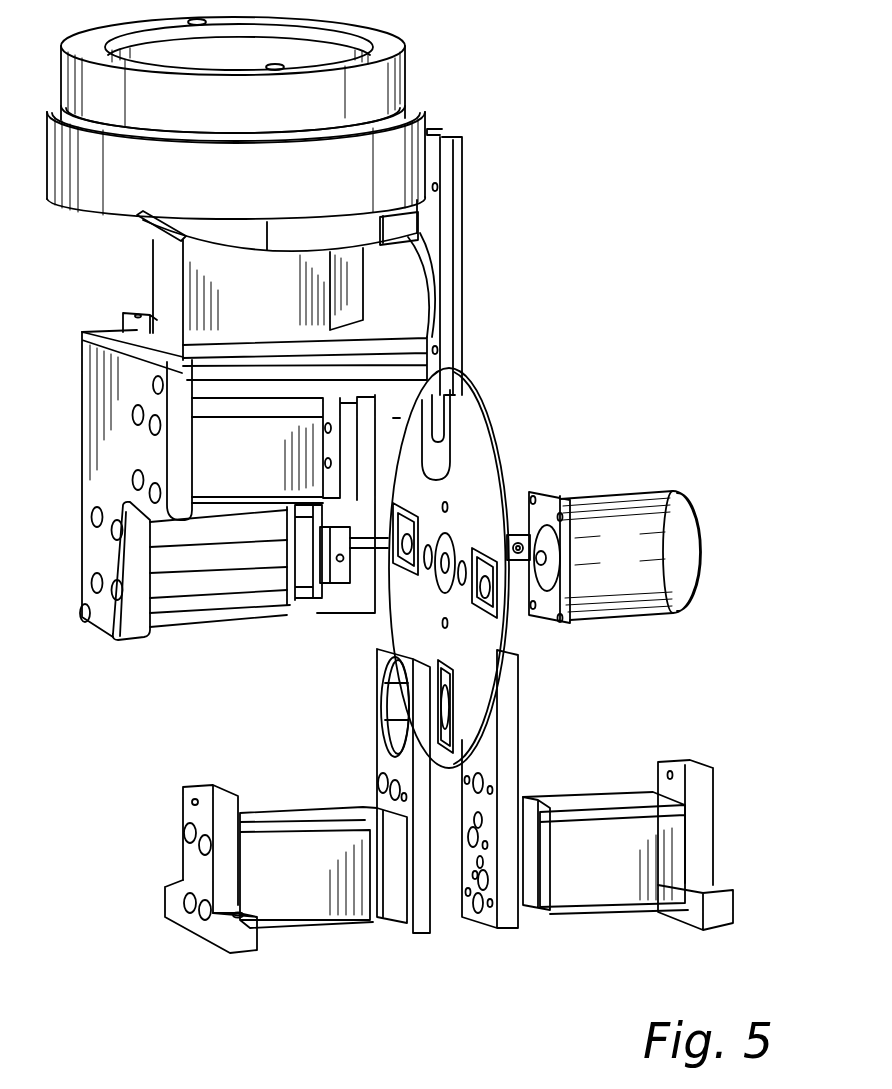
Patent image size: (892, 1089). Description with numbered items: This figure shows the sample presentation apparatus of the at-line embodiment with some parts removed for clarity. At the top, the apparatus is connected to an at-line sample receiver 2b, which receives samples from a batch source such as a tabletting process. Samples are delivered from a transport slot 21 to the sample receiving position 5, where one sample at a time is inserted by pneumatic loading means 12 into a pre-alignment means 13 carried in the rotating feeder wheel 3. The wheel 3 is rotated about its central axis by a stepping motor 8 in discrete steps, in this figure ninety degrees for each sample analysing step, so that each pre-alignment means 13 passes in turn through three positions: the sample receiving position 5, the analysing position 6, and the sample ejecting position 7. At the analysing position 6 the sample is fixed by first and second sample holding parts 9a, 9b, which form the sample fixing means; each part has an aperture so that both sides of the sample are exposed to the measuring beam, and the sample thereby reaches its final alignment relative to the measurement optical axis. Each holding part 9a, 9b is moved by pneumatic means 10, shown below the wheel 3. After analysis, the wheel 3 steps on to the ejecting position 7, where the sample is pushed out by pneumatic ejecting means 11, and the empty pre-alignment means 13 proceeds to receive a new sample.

The at-line sample receiver 2b is at (407, 63).
The transport slot 21 is at (462, 218).
The sample receiving position 5 is at (449, 403).
The pneumatic loading means 12 is at (397, 428).
The rotating wheel 3 is at (493, 428).
The sample ejecting position 7 is at (398, 545).
The stepping motor 8 is at (677, 548).
The pre-alignment means 13 is at (498, 603).
The analysing position 6 is at (455, 703).
The pneumatic ejecting means 11 is at (323, 606).
The first sample holding part 9a is at (383, 765).
The second sample holding part 9b is at (503, 777).
The pneumatic means 10 is at (307, 927).